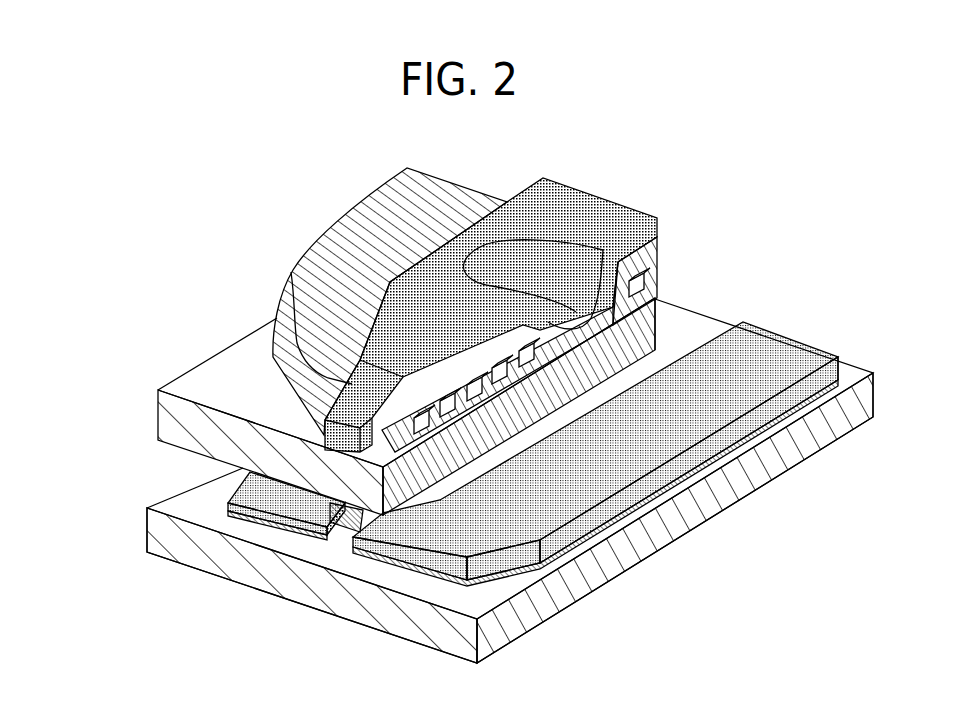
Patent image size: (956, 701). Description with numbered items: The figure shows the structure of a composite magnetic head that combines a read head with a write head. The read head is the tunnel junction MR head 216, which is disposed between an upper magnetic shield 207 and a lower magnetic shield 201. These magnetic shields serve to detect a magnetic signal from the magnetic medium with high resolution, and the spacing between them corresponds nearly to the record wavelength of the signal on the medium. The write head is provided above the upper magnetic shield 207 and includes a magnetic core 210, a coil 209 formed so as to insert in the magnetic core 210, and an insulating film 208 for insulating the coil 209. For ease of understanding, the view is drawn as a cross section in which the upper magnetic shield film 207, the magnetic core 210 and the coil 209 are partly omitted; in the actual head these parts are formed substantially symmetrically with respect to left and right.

The lower magnetic shield 201 is at (217, 553).
The upper magnetic shield 207 is at (177, 422).
The insulating film 208 is at (320, 291).
The coil 209 is at (523, 350).
The magnetic core 210 is at (432, 275).
The tunnel junction MR head 216 is at (343, 523).